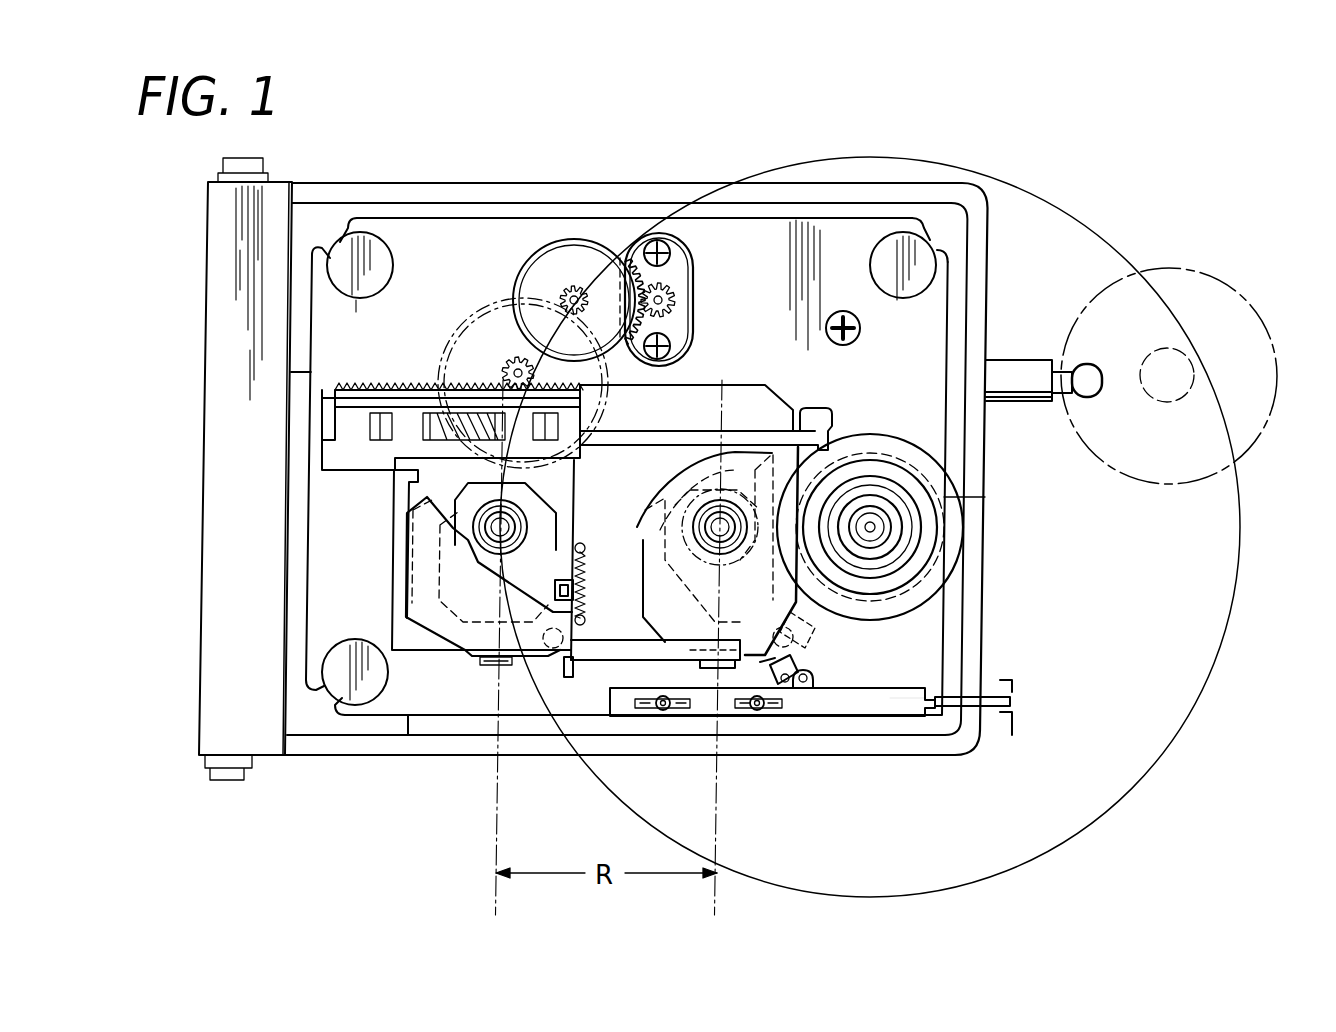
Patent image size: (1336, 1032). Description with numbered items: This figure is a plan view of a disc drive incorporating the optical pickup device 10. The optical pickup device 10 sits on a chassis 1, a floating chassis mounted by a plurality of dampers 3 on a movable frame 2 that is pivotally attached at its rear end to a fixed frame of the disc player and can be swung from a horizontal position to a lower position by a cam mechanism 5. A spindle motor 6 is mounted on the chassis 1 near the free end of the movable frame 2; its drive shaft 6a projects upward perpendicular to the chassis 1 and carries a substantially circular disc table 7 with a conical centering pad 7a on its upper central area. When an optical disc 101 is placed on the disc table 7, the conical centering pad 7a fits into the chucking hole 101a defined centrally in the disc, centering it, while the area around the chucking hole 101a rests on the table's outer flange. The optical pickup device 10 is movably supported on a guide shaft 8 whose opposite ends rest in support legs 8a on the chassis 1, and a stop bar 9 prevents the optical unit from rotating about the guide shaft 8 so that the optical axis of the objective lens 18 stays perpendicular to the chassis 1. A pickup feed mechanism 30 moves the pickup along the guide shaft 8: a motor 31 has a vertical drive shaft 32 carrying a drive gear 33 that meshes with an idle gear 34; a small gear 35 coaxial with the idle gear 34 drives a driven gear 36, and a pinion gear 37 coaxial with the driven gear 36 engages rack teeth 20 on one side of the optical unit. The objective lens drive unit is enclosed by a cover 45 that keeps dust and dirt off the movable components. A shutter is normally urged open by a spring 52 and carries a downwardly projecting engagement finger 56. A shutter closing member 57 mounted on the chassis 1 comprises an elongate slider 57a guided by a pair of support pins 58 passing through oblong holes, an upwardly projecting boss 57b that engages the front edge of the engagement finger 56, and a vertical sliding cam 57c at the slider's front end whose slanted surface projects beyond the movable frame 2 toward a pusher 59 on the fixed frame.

The chassis 1 is at (452, 232).
The movable frame 2 is at (690, 196).
The dampers 3 is at (355, 245).
The cam mechanism 5 is at (1172, 266).
The spindle motor 6 is at (888, 452).
The drive shaft 6a is at (870, 522).
The disc table 7 is at (962, 550).
The conical centering pad 7a is at (900, 545).
The guide shaft 8 is at (712, 433).
The support legs 8a is at (815, 414).
The stop bar 9 is at (598, 652).
The optical pickup device 10 is at (427, 655).
The objective lens 18 is at (503, 527).
The rack teeth 20 is at (388, 383).
The pickup feed mechanism 30 is at (520, 243).
The motor 31 is at (680, 262).
The drive shaft 32 is at (678, 296).
The drive gear 33 is at (680, 330).
The idle gear 34 is at (630, 290).
The small gear 35 is at (576, 296).
The driven gear 36 is at (460, 322).
The pinion gear 37 is at (508, 368).
The cover 45 is at (535, 552).
The spring 52 is at (584, 582).
The engagement finger 56 is at (566, 668).
The shutter closing member 57 is at (855, 720).
The slider 57a is at (890, 703).
The boss 57b is at (810, 672).
The sliding cam 57c is at (965, 708).
The support pins 58 is at (663, 712).
The pusher 59 is at (1005, 737).
The optical disc 101 is at (1172, 740).
The chucking hole 101a is at (915, 508).